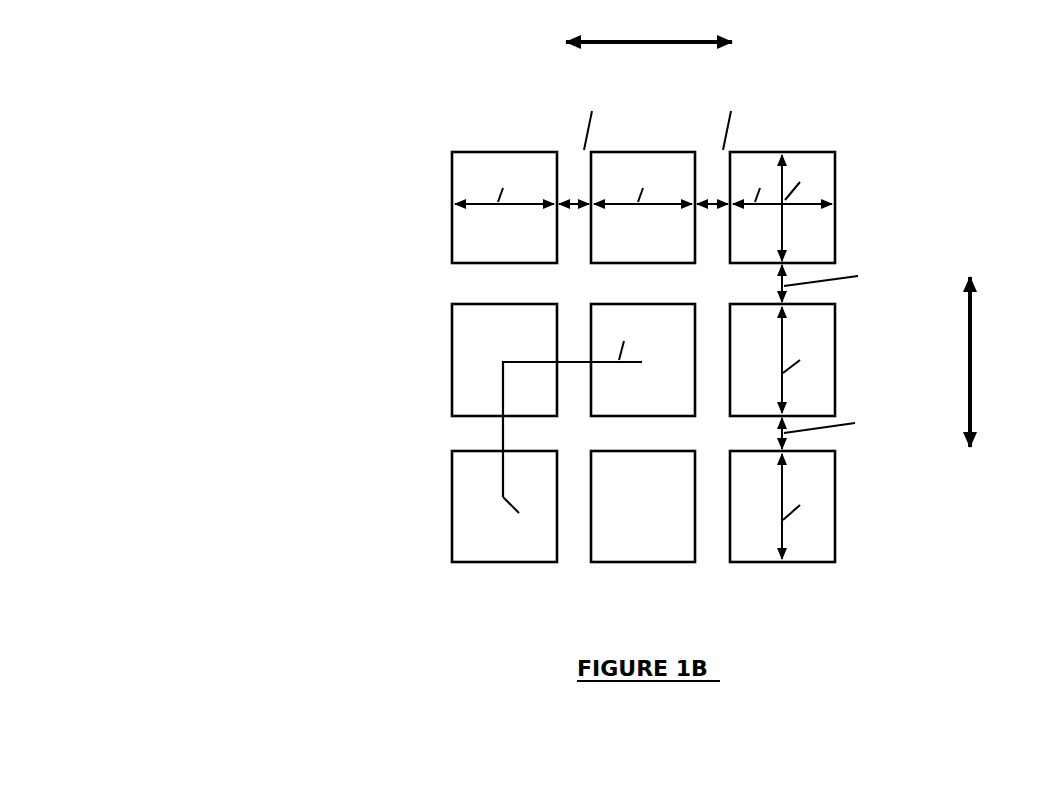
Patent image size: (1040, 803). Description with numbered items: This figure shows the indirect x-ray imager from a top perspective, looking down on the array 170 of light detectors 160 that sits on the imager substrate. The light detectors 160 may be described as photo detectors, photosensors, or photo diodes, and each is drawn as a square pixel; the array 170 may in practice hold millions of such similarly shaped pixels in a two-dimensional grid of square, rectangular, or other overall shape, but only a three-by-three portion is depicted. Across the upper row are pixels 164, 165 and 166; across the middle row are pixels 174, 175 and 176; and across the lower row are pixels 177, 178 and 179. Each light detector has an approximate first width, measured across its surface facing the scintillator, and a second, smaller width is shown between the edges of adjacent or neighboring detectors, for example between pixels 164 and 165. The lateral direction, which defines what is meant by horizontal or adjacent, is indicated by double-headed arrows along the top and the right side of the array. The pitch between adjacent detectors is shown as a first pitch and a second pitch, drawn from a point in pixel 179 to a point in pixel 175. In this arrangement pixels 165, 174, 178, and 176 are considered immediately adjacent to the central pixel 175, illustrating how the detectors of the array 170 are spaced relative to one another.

The light detectors 160 is at (362, 397).
The array 170 is at (362, 260).
The pixel 164 is at (826, 148).
The pixel 165 is at (651, 148).
The pixel 166 is at (448, 167).
The pixel 174 is at (838, 326).
The pixel 175 is at (680, 300).
The pixel 176 is at (448, 319).
The pixel 177 is at (838, 469).
The pixel 178 is at (664, 565).
The pixel 179 is at (448, 466).